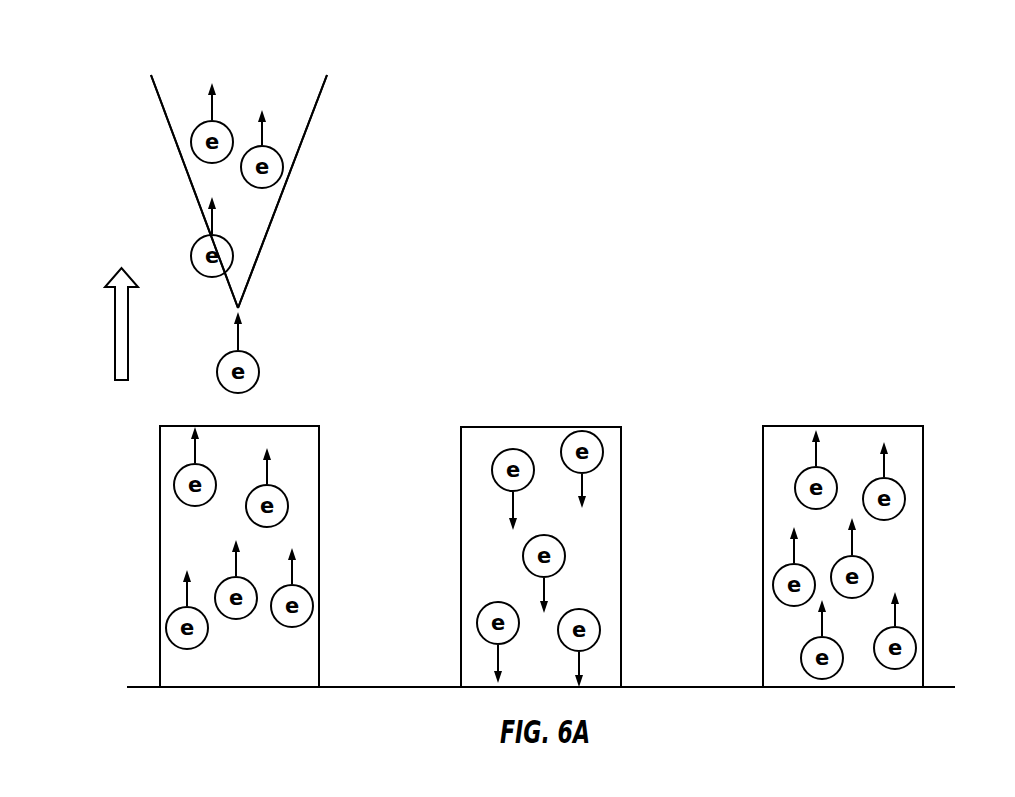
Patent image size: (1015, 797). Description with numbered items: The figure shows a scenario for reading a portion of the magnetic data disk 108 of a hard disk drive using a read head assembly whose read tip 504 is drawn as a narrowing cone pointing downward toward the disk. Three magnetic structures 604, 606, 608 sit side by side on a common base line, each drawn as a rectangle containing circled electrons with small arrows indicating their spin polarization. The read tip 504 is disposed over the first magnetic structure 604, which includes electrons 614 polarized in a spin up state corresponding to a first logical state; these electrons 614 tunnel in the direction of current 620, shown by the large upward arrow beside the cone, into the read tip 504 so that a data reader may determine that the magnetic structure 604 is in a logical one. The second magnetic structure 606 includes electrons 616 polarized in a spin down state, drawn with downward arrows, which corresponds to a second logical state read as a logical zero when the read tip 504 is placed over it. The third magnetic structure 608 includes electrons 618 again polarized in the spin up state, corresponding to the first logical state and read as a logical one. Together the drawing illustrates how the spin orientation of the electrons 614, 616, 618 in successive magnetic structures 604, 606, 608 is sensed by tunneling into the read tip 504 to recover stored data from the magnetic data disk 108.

The magnetic data disk 108 is at (95, 159).
The read tip 504 is at (248, 288).
The electrons 614 is at (190, 141).
The electrons 616 is at (492, 470).
The electrons 618 is at (795, 488).
The direction of current 620 is at (128, 343).
The magnetic structure 604 is at (281, 426).
The magnetic structure 606 is at (505, 427).
The magnetic structure 608 is at (792, 426).